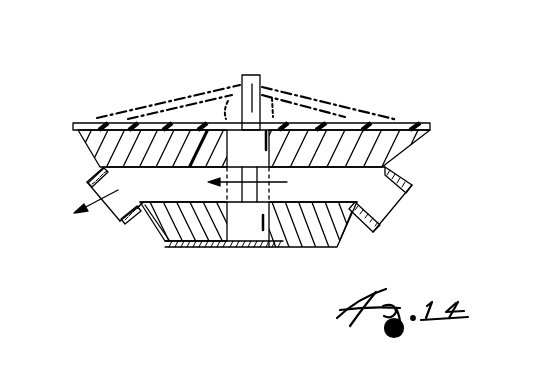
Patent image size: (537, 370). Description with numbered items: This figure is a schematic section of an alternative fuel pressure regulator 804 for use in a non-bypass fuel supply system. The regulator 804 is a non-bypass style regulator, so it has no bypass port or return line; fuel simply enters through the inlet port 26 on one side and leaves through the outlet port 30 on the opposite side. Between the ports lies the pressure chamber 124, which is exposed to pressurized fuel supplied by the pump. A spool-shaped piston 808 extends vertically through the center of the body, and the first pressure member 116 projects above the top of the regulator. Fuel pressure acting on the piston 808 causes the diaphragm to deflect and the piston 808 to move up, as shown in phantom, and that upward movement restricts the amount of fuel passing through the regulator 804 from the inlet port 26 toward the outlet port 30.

The first pressure member 116 is at (257, 75).
The pressure chamber 124 is at (312, 185).
The pressure regulator 804 is at (426, 96).
The inlet port 26 is at (412, 186).
The outlet port 30 is at (88, 181).
The spool-shaped piston 808 is at (243, 220).